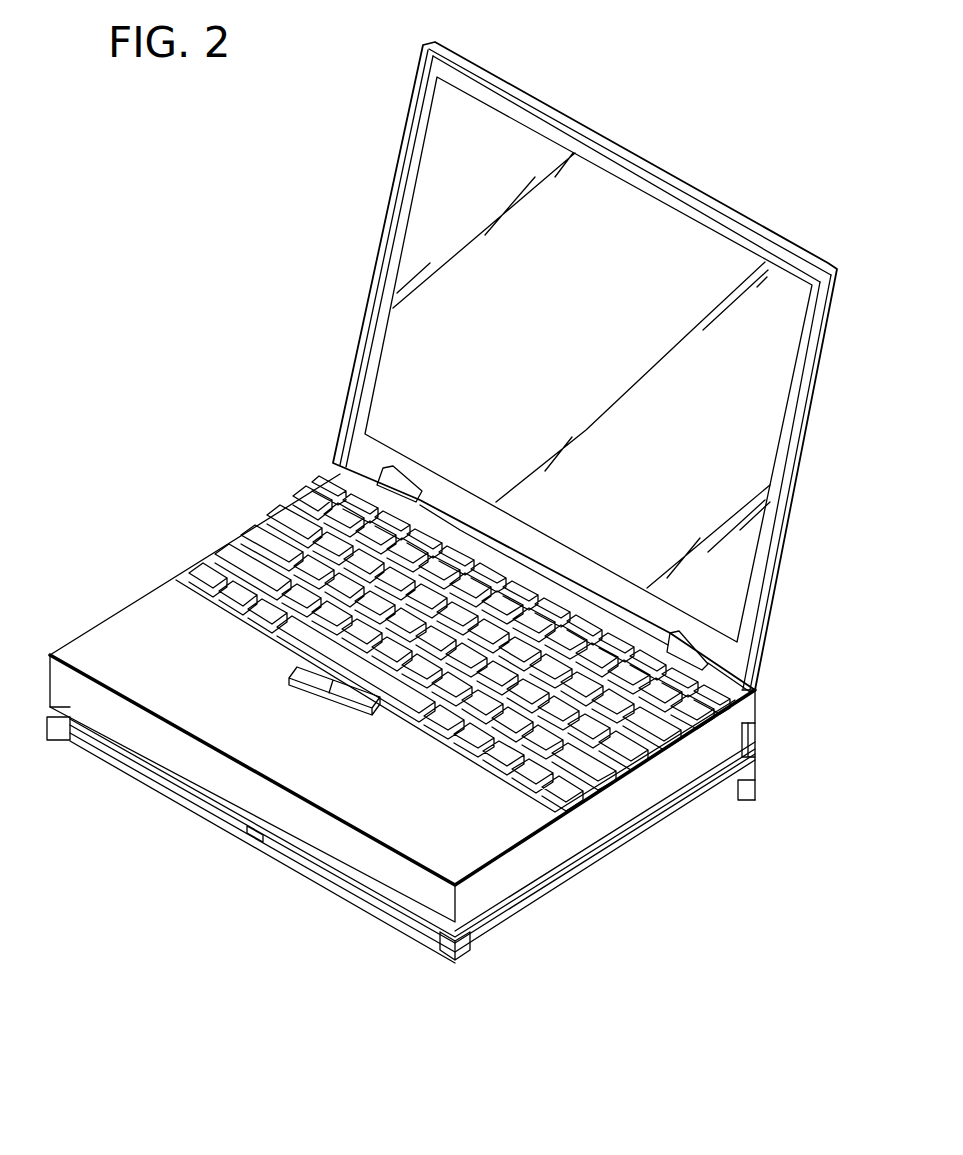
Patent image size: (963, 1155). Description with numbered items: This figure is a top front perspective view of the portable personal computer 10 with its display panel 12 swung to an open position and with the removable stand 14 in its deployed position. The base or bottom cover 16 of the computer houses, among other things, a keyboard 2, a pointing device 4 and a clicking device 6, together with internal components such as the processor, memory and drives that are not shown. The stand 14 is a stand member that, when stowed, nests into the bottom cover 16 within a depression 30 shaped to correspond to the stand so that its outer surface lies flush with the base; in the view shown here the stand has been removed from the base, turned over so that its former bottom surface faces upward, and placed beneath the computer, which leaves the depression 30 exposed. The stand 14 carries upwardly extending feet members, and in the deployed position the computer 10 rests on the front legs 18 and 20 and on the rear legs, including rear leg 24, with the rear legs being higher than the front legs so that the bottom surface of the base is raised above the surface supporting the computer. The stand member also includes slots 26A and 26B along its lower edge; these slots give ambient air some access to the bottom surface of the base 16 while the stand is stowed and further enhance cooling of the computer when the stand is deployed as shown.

The portable personal computer 10 is at (277, 345).
The keyboard 2 is at (426, 644).
The pointing device 4 is at (428, 622).
The clicking device 6 is at (347, 702).
The display panel 12 is at (802, 430).
The removable stand 14 is at (600, 868).
The base or bottom cover 16 is at (755, 710).
The front leg 18 is at (60, 740).
The front leg 20 is at (450, 958).
The rear leg 24 is at (743, 800).
The slot 26A is at (142, 770).
The slot 26B is at (303, 866).
The depression 30 is at (750, 738).